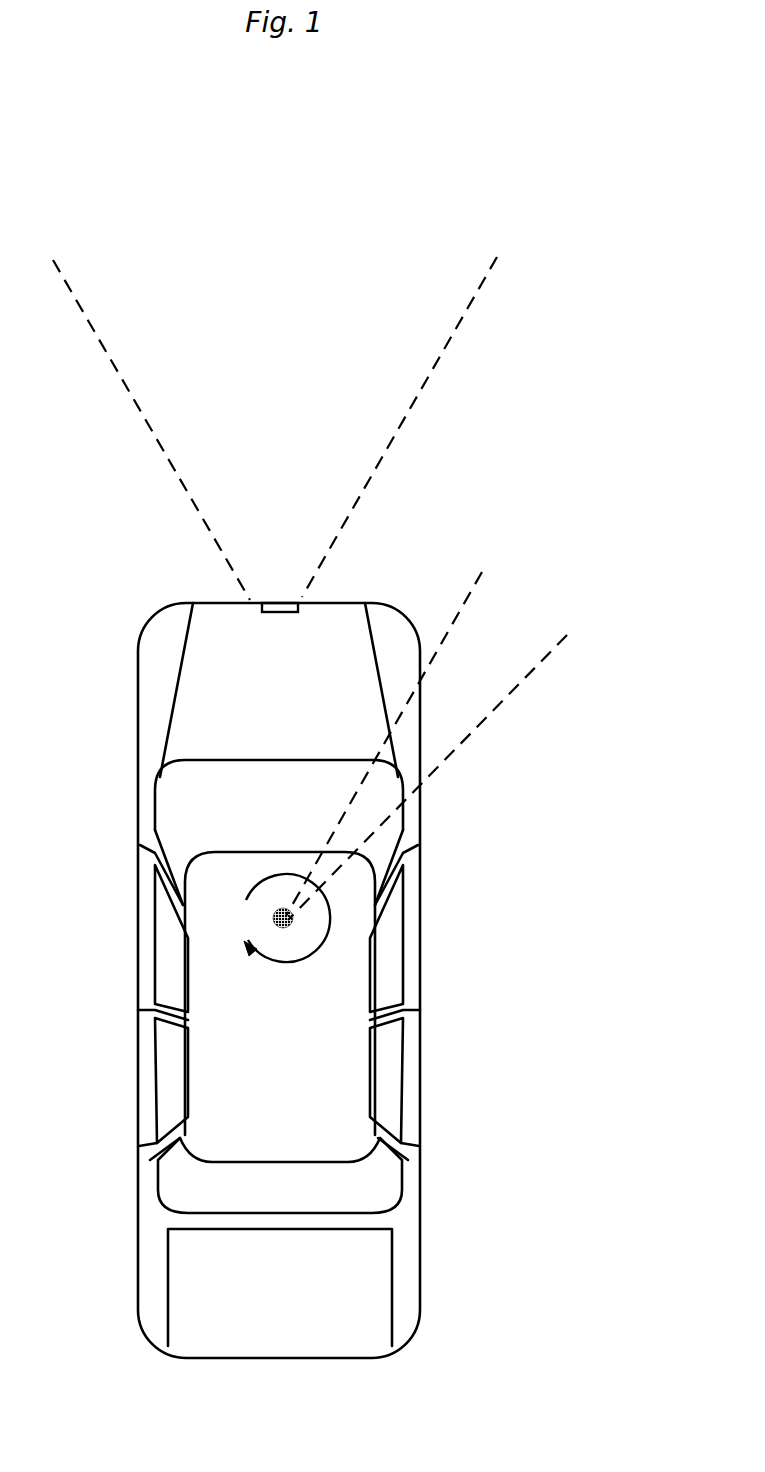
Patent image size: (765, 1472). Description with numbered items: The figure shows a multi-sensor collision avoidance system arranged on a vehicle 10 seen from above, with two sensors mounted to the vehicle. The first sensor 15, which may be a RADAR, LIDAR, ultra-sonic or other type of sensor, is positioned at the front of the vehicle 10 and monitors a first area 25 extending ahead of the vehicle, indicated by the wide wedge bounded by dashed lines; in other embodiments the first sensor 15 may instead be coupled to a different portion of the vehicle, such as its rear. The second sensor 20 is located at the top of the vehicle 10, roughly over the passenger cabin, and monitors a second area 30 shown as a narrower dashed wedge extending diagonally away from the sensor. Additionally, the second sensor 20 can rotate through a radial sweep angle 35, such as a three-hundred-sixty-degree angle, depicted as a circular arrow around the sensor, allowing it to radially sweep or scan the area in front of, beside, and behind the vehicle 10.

The vehicle 10 is at (148, 622).
The first sensor 15 is at (275, 602).
The second sensor 20 is at (292, 922).
The first area 25 is at (43, 223).
The second area 30 is at (498, 543).
The radial sweep angle 35 is at (233, 980).